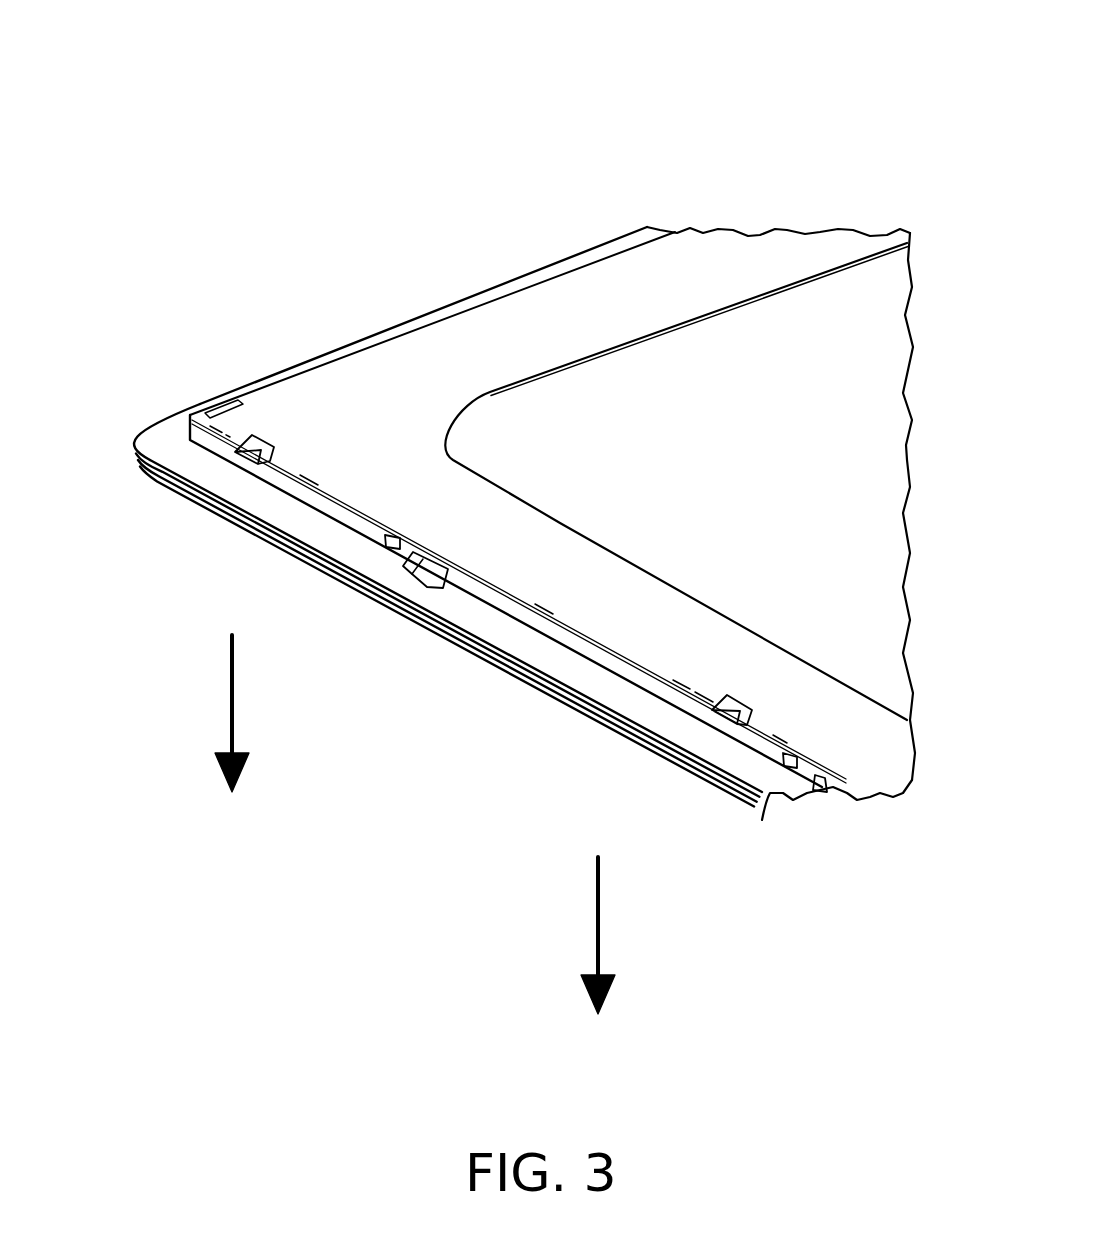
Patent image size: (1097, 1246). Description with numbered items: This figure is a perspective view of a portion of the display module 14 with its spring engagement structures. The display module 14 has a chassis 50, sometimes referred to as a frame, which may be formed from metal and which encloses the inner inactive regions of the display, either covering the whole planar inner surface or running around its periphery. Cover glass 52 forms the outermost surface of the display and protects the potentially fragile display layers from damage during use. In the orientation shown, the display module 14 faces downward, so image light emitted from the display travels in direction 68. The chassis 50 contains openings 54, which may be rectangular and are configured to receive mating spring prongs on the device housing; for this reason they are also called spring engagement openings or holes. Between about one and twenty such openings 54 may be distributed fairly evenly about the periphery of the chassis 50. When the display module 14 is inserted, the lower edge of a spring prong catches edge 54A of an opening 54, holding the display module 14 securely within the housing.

The display module 14 is at (841, 86).
The chassis 50 is at (305, 393).
The cover glass 52 is at (132, 453).
The openings 54 is at (428, 570).
The edge of opening 54A is at (421, 558).
The direction 68 is at (232, 699).